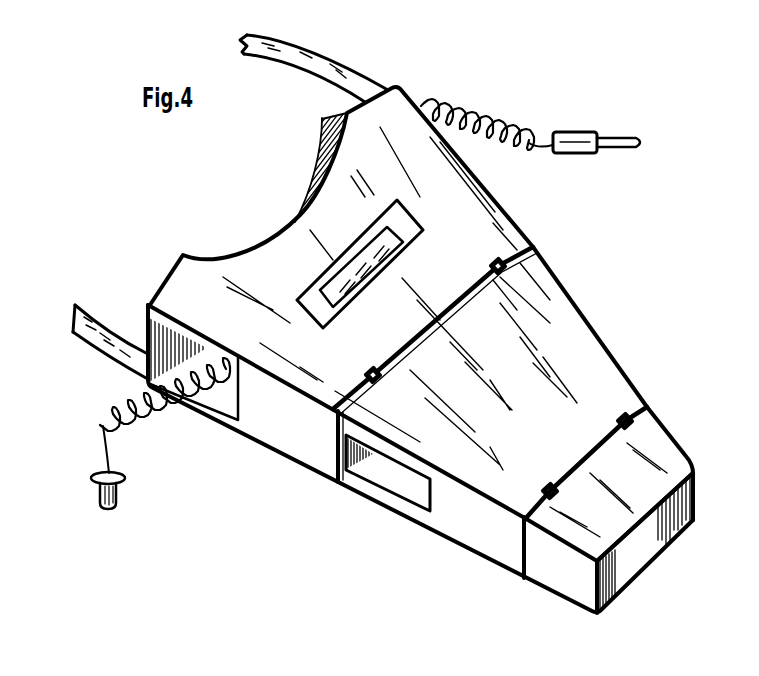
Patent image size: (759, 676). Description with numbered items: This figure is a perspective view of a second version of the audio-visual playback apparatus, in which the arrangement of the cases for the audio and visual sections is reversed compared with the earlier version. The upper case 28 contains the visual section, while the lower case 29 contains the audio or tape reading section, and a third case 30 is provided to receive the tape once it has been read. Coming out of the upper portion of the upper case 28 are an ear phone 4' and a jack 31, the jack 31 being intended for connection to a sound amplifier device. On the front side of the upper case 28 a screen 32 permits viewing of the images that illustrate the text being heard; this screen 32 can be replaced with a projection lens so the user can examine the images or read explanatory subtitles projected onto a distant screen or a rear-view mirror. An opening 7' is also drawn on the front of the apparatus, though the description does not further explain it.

The upper case 28 is at (473, 207).
The lower case 29 is at (575, 322).
The third case 30 is at (660, 443).
The jack 31 is at (578, 131).
The screen 32 is at (343, 287).
The opening in front wall 7' is at (365, 496).
The ear phone 4' is at (160, 437).